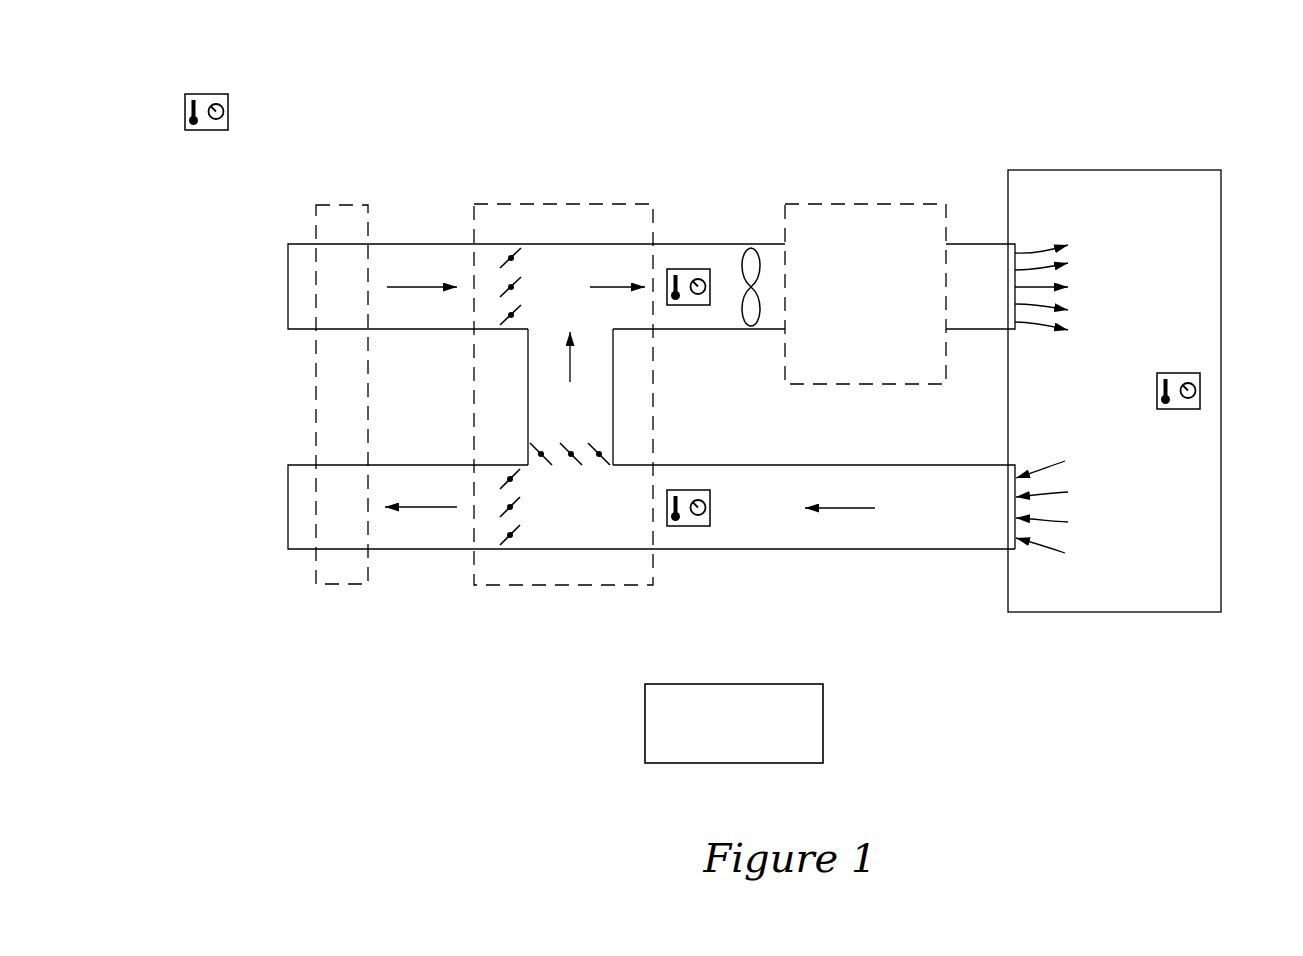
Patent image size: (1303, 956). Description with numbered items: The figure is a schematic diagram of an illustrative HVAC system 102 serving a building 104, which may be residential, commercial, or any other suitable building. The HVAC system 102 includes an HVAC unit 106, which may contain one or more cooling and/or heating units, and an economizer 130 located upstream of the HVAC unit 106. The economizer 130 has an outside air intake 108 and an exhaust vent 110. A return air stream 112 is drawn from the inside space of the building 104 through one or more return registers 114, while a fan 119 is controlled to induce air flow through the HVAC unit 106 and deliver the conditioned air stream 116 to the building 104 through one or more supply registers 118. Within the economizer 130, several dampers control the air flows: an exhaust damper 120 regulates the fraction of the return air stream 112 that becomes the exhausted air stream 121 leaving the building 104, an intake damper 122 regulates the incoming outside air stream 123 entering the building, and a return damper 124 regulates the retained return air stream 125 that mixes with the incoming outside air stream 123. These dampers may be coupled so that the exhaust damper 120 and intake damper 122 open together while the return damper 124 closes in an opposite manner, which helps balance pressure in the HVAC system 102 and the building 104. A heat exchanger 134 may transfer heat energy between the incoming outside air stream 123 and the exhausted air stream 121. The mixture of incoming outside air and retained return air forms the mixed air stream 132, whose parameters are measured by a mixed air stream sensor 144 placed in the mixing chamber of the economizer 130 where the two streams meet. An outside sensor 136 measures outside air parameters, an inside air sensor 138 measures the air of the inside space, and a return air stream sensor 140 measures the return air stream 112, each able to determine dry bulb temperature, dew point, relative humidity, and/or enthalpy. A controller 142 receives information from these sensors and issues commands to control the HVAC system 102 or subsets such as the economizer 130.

The HVAC system 102 is at (816, 99).
The building 104 is at (1221, 213).
The HVAC unit 106 is at (866, 204).
The outside air intake 108 is at (288, 287).
The exhaust vent 110 is at (288, 508).
The return air stream 112 is at (853, 508).
The return register 114 is at (1016, 549).
The conditioned air stream 116 is at (1008, 287).
The supply register 118 is at (1016, 250).
The fan 119 is at (752, 287).
The exhaust damper 120 is at (510, 507).
The exhausted air stream 121 is at (430, 508).
The intake damper 122 is at (507, 288).
The incoming outside air stream 123 is at (408, 280).
The return damper 124 is at (571, 456).
The retained return air stream 125 is at (570, 370).
The economizer 130 is at (563, 204).
The mixed air stream 132 is at (606, 287).
The heat exchanger 134 is at (338, 205).
The outside sensor 136 is at (207, 93).
The inside air sensor 138 is at (1200, 381).
The return air stream sensor 140 is at (688, 526).
The controller 142 is at (823, 723).
The mixed air stream sensor 144 is at (688, 269).